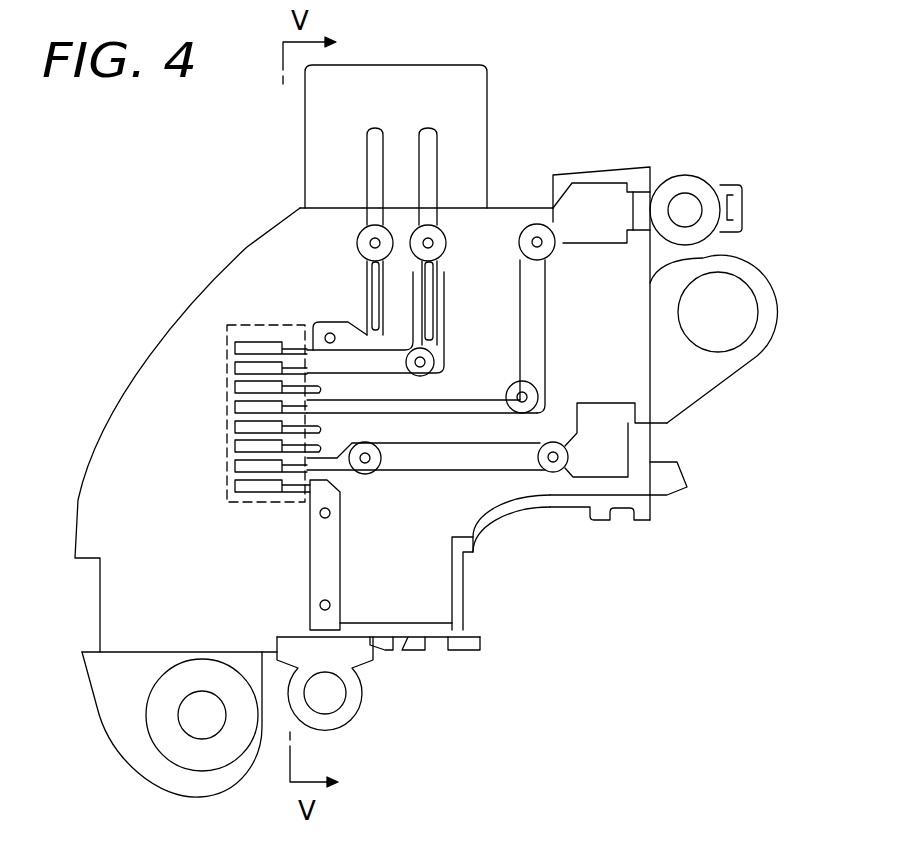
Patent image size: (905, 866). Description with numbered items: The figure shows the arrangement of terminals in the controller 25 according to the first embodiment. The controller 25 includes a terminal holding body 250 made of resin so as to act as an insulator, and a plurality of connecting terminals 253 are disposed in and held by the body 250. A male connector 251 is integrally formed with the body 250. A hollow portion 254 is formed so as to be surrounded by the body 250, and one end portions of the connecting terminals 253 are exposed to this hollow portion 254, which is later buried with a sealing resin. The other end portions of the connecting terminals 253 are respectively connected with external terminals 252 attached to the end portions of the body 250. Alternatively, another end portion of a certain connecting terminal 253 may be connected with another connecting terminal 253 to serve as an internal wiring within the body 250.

The controller 25 is at (645, 59).
The terminal holding body 250 is at (146, 336).
The male connector 251 is at (466, 64).
The external terminals 252 is at (373, 151).
The connecting terminals 253 is at (285, 345).
The hollow portion 254 is at (227, 383).